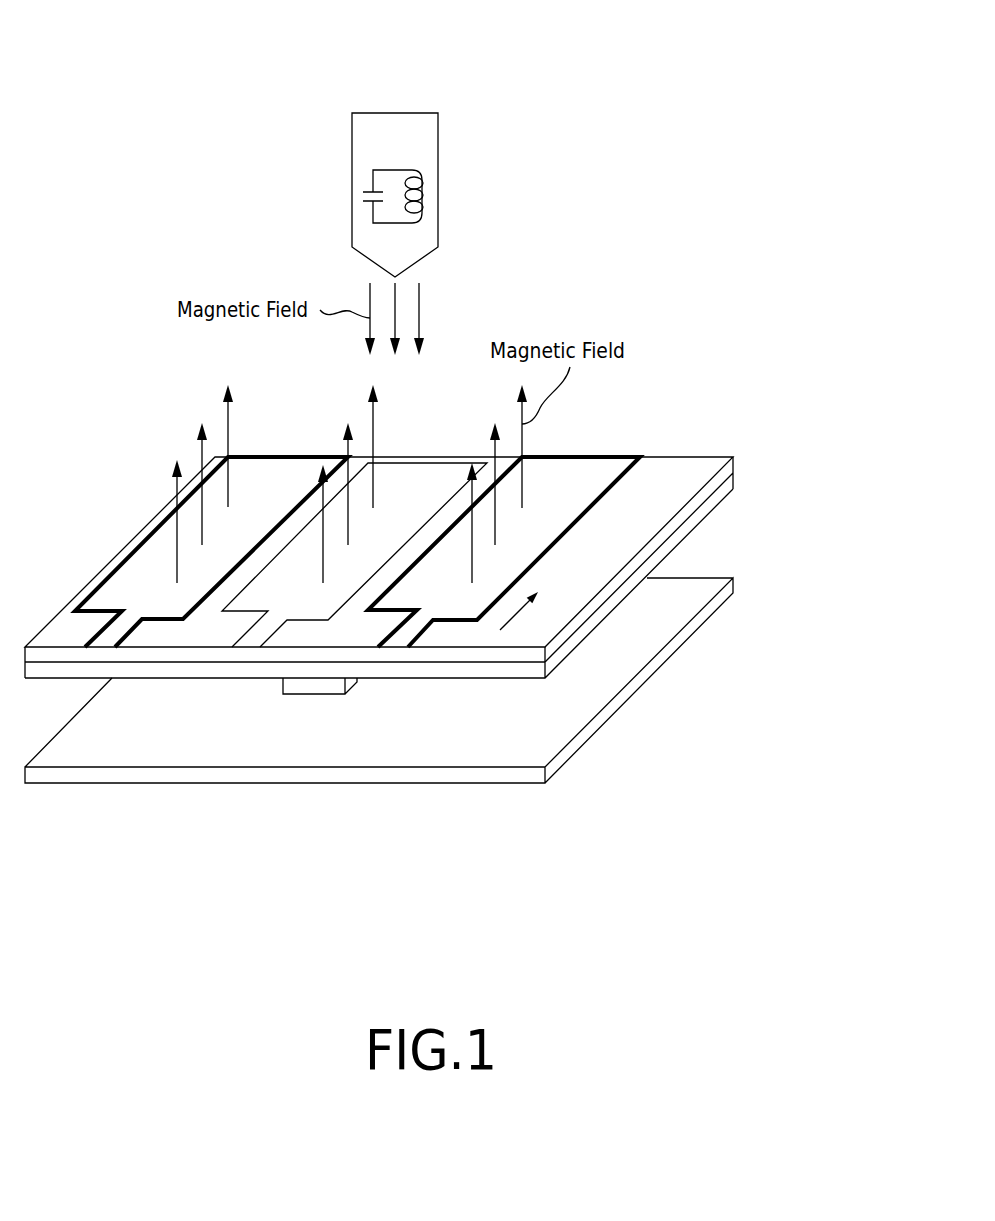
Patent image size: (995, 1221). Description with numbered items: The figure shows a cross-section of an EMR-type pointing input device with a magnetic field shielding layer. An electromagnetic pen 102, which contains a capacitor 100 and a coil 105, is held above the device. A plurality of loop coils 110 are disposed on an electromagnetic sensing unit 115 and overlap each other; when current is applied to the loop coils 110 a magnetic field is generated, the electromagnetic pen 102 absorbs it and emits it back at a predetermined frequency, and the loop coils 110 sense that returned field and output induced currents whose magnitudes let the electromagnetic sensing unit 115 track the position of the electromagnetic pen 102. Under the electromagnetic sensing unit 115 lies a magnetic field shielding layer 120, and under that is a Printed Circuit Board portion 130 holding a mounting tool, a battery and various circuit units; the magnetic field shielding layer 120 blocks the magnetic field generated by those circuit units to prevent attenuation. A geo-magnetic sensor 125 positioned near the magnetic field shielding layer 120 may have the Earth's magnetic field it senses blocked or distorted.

The electromagnetic pen 102 is at (445, 91).
The capacitor 100 is at (363, 190).
The coil 105 is at (420, 203).
The loop coil 110 is at (277, 453).
The electromagnetic sensing unit 115 is at (683, 467).
The magnetic field shielding layer 120 is at (693, 528).
The geo-magnetic sensor 125 is at (315, 690).
The Printed Circuit Board portion 130 is at (557, 730).